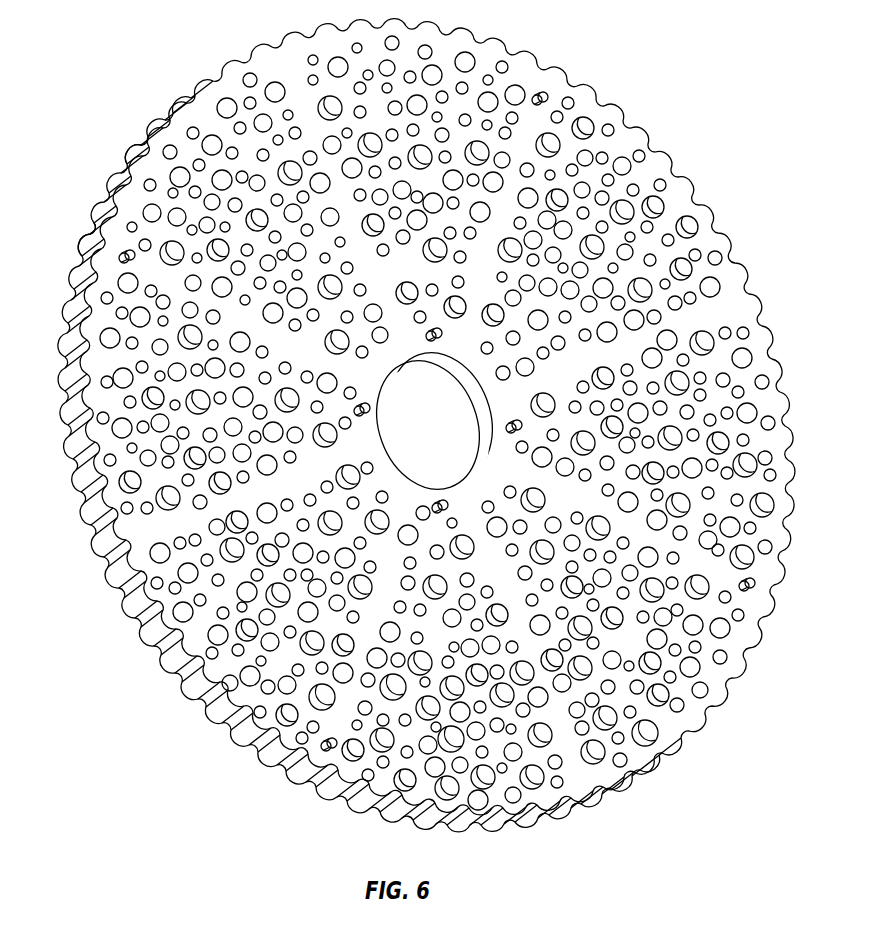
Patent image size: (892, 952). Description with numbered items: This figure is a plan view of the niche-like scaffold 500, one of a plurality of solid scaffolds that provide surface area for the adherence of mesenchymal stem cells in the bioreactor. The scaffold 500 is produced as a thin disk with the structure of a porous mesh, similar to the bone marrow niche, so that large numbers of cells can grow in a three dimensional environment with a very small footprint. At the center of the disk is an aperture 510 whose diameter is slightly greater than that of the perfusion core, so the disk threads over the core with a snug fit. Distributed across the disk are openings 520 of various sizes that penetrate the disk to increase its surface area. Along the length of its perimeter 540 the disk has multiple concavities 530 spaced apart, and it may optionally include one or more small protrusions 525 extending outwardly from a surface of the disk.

The scaffold 500 is at (738, 245).
The aperture 510 is at (380, 440).
The openings 520 is at (118, 483).
The protrusions 525 is at (125, 262).
The concavities 530 is at (92, 248).
The perimeter 540 is at (125, 162).